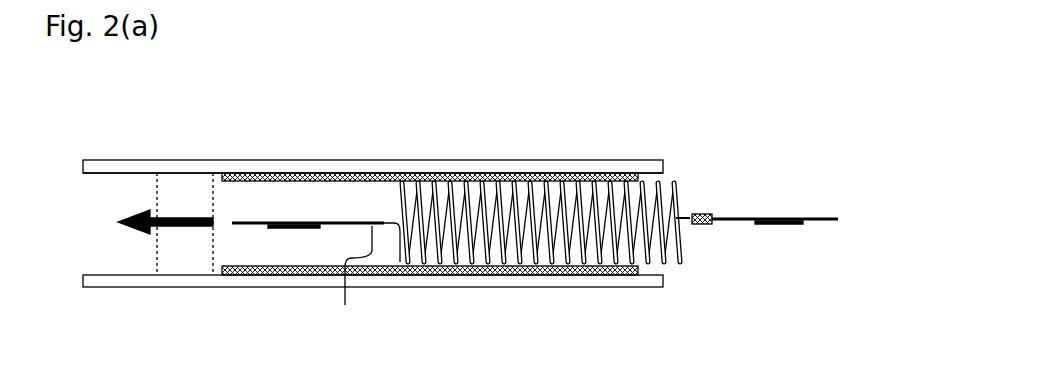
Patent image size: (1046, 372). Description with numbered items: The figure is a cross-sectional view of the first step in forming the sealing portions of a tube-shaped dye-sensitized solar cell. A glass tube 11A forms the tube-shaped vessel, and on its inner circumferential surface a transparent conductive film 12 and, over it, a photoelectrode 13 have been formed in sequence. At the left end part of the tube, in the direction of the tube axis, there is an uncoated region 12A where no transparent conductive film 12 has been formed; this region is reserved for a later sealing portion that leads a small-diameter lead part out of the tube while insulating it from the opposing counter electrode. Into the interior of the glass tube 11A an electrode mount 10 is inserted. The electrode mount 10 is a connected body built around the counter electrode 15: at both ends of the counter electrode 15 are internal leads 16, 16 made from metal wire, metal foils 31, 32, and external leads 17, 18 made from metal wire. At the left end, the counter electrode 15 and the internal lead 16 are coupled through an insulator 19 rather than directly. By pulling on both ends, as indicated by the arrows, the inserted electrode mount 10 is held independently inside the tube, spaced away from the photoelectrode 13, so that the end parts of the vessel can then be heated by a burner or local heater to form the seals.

The electrode mount 10 is at (714, 197).
The glass tube 11A is at (406, 160).
The transparent conductive film 12 is at (350, 173).
The uncoated region 12A is at (208, 201).
The photoelectrode 13 is at (300, 173).
The counter electrode 15 is at (522, 285).
The internal lead 16 is at (733, 224).
The external lead 17 is at (258, 226).
The external lead 18 is at (821, 224).
The insulator 19 is at (700, 225).
The metal foil 31 is at (292, 229).
The metal foil 32 is at (778, 226).